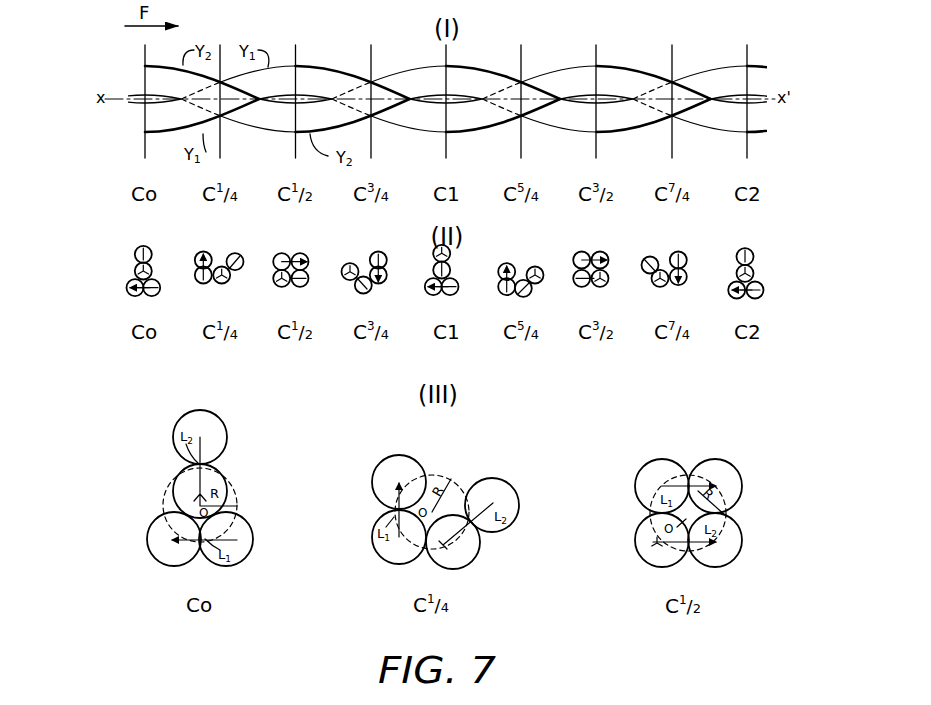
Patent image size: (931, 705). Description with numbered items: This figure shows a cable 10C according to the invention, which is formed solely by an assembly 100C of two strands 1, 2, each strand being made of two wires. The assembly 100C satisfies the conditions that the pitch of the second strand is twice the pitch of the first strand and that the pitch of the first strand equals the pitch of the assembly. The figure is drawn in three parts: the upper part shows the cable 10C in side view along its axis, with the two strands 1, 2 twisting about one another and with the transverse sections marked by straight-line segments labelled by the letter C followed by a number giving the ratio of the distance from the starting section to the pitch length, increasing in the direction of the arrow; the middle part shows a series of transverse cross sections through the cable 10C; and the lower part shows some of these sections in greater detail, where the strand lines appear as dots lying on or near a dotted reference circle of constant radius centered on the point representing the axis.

The strand 1 is at (503, 316).
The strand 2 is at (503, 303).
The cable 10C is at (446, 297).
The assembly 100C is at (418, 304).